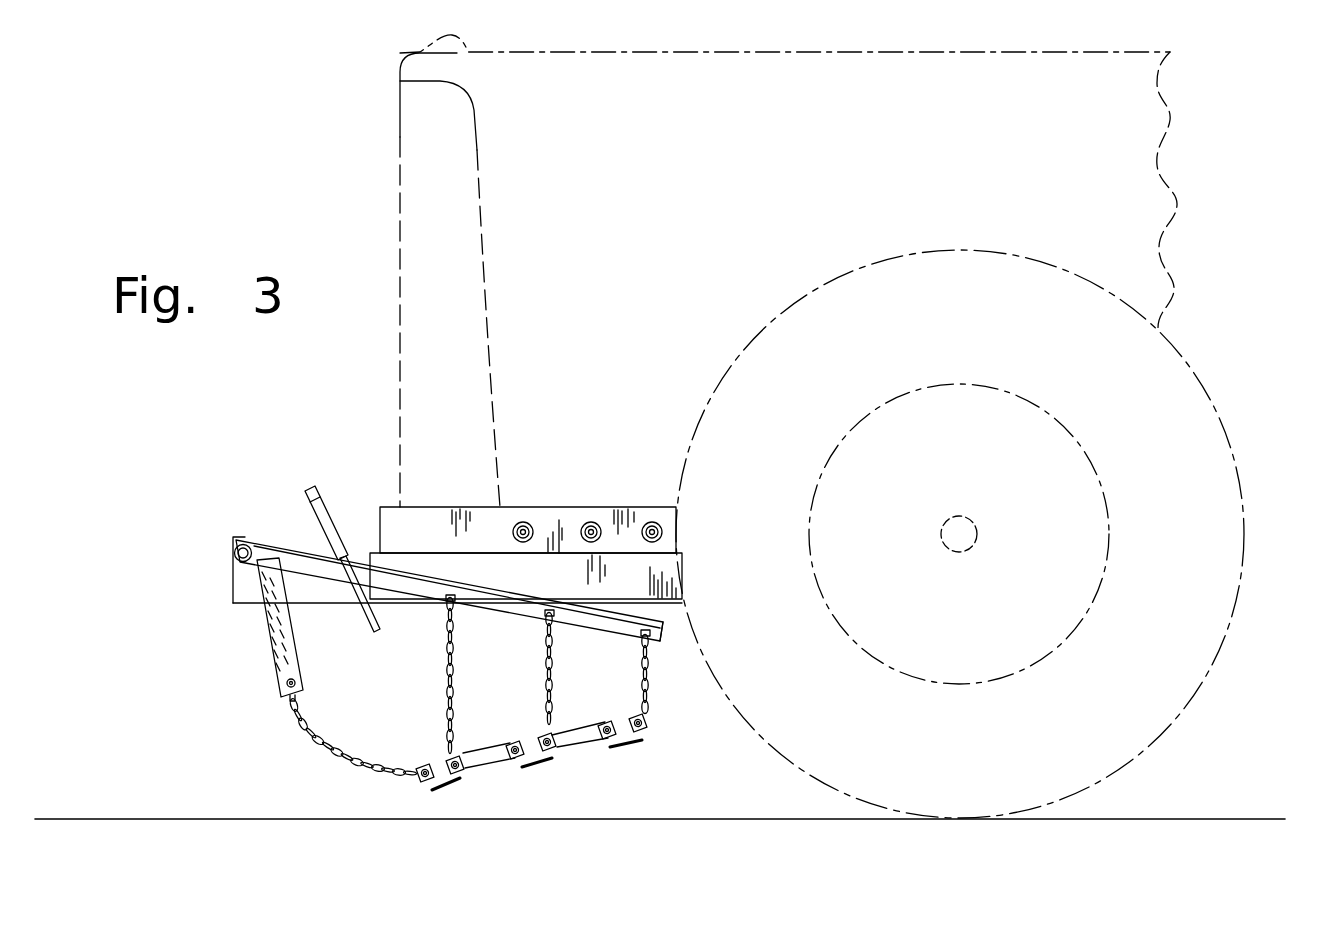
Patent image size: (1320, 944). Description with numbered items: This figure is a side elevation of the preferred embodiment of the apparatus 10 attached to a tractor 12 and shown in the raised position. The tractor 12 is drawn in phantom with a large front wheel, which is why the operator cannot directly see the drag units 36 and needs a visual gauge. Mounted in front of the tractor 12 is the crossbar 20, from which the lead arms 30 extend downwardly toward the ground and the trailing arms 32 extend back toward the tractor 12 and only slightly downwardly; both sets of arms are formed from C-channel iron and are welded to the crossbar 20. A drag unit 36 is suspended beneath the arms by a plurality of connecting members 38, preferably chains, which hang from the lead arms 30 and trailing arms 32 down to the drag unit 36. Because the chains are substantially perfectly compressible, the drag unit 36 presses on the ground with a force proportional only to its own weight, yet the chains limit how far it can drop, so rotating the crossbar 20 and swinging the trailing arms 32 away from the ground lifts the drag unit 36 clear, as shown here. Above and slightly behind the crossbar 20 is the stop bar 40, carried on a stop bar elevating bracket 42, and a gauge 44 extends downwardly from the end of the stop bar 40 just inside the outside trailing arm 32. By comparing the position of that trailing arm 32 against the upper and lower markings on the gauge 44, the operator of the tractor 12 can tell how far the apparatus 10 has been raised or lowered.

The apparatus 10 is at (232, 697).
The tractor 12 is at (400, 53).
The crossbar 20 is at (236, 540).
The lead arm 30 is at (283, 668).
The trailing arm 32 is at (653, 617).
The drag unit 36 is at (540, 758).
The connecting member 38 is at (330, 752).
The stop bar 40 is at (308, 490).
The stop bar elevating bracket 42 is at (307, 527).
The gauge 44 is at (368, 617).